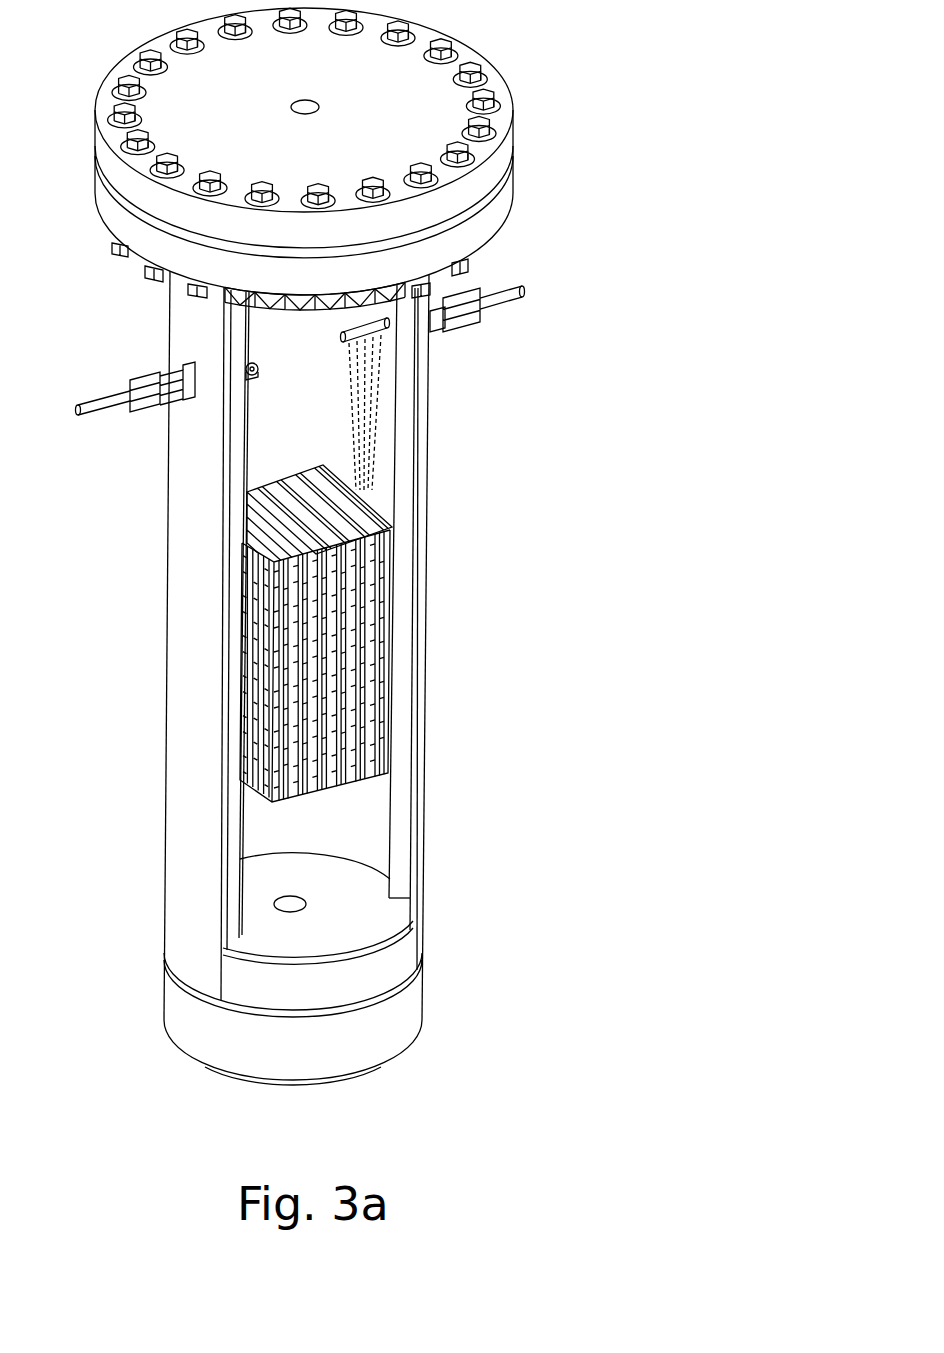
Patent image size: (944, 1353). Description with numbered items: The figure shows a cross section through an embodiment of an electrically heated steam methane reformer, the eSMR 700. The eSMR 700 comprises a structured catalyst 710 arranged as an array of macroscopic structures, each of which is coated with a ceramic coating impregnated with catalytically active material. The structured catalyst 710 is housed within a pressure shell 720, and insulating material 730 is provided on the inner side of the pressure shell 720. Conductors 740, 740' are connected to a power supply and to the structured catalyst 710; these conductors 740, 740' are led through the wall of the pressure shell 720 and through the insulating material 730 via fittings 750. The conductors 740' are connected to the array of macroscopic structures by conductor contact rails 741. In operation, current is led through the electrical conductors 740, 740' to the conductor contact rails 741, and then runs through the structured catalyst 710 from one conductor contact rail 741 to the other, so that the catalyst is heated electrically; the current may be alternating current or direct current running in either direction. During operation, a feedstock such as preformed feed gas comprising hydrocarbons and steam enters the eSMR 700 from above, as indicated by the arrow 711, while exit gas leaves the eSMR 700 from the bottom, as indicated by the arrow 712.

The eSMR 700 is at (546, 132).
The arrow indicating feedstock entry 711 is at (305, 50).
The arrow indicating exit gas 712 is at (292, 848).
The pressure shell 720 is at (208, 832).
The insulating material 730 is at (402, 584).
The conductor contact rail 741 is at (318, 459).
The conductor 740 is at (565, 292).
The conductor 740' is at (329, 404).
The fitting 750 is at (474, 324).
The structured catalyst 710 is at (331, 801).